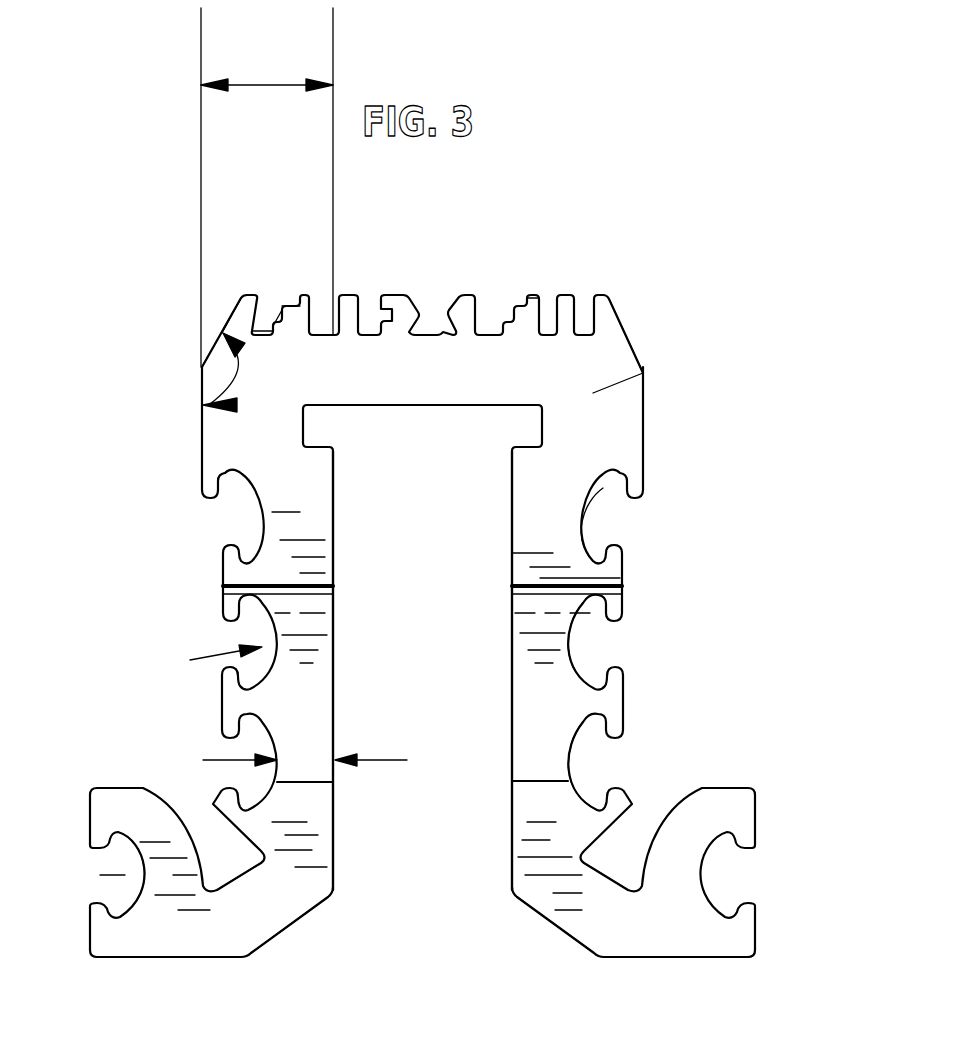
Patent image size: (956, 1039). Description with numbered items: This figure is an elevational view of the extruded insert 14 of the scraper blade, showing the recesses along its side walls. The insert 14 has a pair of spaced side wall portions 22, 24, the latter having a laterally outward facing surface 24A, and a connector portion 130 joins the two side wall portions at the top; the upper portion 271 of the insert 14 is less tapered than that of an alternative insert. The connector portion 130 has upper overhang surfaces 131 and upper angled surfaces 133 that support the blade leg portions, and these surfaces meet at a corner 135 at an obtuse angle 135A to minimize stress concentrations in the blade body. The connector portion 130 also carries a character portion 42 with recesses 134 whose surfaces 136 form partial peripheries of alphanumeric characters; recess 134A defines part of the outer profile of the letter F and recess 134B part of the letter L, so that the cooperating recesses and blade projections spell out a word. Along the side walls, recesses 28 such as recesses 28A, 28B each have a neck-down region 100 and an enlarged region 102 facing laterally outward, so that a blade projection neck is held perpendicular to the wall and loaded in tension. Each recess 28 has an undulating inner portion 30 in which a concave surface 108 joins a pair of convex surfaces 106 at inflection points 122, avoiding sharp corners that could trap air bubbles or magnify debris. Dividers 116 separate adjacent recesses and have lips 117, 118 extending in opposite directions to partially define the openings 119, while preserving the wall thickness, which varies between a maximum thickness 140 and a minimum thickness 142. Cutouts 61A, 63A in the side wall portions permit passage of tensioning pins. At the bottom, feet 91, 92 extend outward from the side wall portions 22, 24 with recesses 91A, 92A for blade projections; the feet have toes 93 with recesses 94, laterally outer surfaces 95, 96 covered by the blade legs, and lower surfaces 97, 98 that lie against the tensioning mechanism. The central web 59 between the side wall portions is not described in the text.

The insert 14 is at (625, 325).
The side wall portion 22 is at (336, 778).
The side wall portion 24 is at (510, 762).
The laterally outward facing surface 24A is at (622, 700).
The recess 28 is at (253, 513).
The recess 28A is at (612, 633).
The recess 28B is at (603, 515).
The undulating inner portion 30 is at (190, 660).
The character portion 42 is at (535, 300).
The central web 59 is at (417, 827).
The cutout 61A is at (243, 725).
The cutout 63A is at (553, 740).
The foot 91 is at (273, 917).
The recess 91A is at (293, 900).
The foot 92 is at (540, 900).
The recess 92A is at (610, 873).
The toe 93 is at (155, 945).
The recess 94 is at (133, 873).
The laterally outer surface 95 is at (92, 930).
The laterally outer surface 96 is at (760, 925).
The lower surface 97 is at (220, 958).
The lower surface 98 is at (675, 958).
The neck-down region 100 is at (227, 603).
The enlarged region 102 is at (253, 667).
The convex surface 106 is at (222, 547).
The concave surface 108 is at (240, 473).
The divider 116 is at (613, 555).
The lip 117 is at (618, 553).
The lip 118 is at (618, 605).
The opening 119 is at (618, 620).
The inflection point 122 is at (220, 477).
The connector portion 130 is at (593, 393).
The upper overhang surface 131 is at (202, 403).
The upper angled surface 133 is at (223, 312).
The recess 134 is at (270, 310).
The recess 134A is at (280, 306).
The recess 134B is at (315, 307).
The corner 135 is at (202, 368).
The obtuse angle 135A is at (212, 345).
The surface 136 is at (267, 310).
The maximum thickness 140 is at (262, 85).
The minimum thickness 142 is at (380, 762).
The upper portion 271 is at (633, 343).